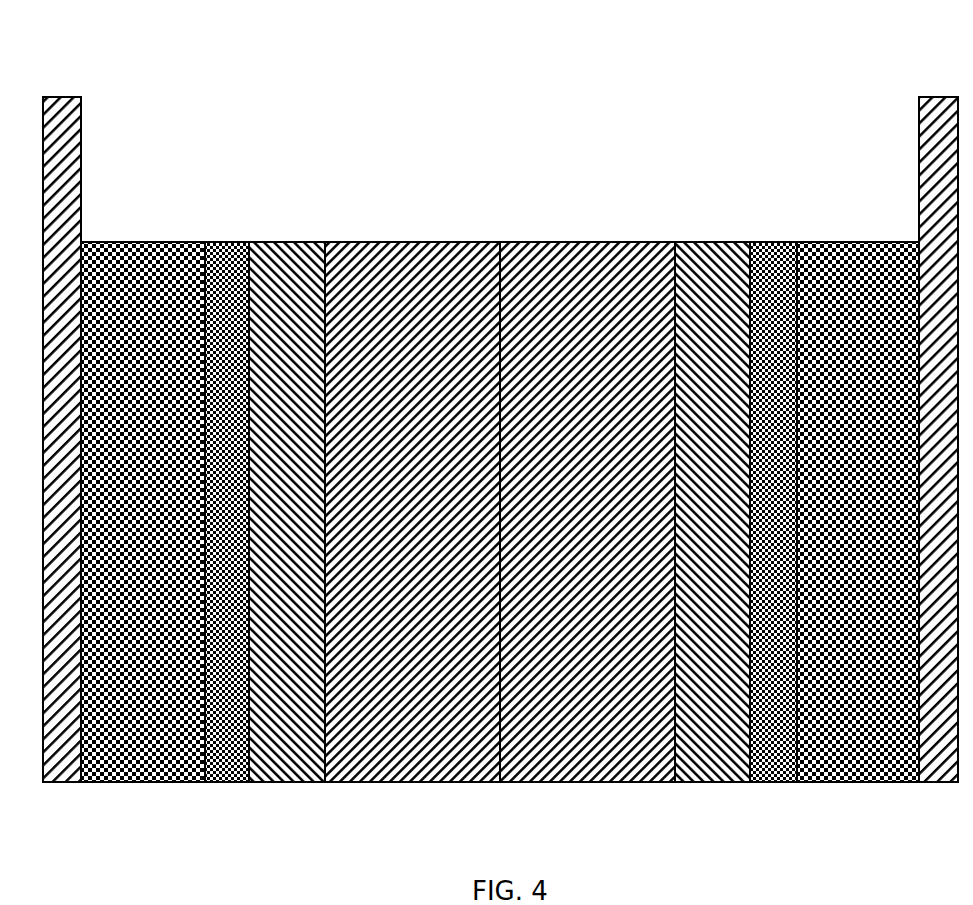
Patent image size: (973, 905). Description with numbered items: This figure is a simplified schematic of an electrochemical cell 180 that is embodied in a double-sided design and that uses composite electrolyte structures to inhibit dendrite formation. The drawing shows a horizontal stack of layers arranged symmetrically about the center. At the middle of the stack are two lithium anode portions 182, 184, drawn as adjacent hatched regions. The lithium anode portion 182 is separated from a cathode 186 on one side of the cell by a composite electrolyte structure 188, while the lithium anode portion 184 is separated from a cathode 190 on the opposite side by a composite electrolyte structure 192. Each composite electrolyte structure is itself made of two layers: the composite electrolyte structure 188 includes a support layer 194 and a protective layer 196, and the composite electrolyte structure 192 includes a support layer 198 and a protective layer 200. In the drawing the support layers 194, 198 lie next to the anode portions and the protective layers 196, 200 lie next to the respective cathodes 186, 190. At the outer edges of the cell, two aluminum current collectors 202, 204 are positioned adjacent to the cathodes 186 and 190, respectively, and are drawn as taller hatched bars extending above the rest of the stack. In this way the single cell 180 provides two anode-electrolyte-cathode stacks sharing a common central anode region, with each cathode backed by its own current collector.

The electrochemical cell 180 is at (674, 72).
The lithium anode portion 182 is at (615, 242).
The lithium anode portion 184 is at (393, 783).
The cathode 186 is at (888, 783).
The composite electrolyte structure 188 is at (772, 210).
The cathode 190 is at (118, 242).
The composite electrolyte structure 192 is at (275, 208).
The support layer 194 is at (727, 783).
The protective layer 196 is at (788, 783).
The support layer 198 is at (293, 783).
The protective layer 200 is at (230, 783).
The aluminum current collector 202 is at (919, 120).
The aluminum current collector 204 is at (81, 111).